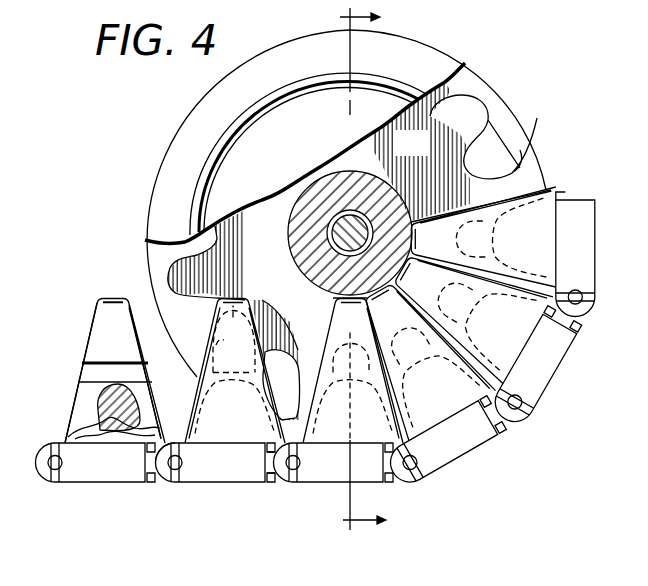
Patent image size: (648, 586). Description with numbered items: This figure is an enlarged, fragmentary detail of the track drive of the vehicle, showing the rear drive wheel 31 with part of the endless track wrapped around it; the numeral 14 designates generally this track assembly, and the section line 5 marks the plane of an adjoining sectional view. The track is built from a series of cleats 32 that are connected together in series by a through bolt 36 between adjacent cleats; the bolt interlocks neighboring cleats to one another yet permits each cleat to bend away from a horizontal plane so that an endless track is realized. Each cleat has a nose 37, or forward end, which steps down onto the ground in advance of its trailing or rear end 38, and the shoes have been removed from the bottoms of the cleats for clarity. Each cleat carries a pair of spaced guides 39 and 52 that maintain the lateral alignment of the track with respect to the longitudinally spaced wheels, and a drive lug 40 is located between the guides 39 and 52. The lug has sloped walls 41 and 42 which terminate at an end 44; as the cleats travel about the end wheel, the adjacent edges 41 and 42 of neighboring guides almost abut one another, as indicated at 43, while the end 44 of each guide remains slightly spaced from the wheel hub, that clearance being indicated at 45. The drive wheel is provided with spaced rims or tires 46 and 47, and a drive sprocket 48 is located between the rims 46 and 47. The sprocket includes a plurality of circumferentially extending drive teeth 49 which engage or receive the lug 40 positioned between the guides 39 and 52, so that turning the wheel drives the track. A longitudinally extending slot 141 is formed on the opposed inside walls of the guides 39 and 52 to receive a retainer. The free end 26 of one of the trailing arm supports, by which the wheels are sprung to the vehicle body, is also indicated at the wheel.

The section line 5- 5 is at (372, 270).
The conveyor chain 14 is at (333, 364).
The free end 26 is at (335, 220).
The rear drive wheel 31 is at (147, 157).
The cleats 32 is at (216, 470).
The through bolt 36 is at (186, 468).
The nose 37 is at (167, 478).
The rear end 38 is at (276, 484).
The guide 39 is at (88, 305).
The drive lug 40 is at (84, 400).
The sloped wall 41 is at (80, 356).
The sloped wall 42 is at (153, 370).
The near-abutment of adjacent edges 43 is at (432, 300).
The end of the guide 44 is at (114, 298).
The space from wheel hub 45 is at (326, 298).
The rim 46 is at (436, 44).
The rim 47 is at (468, 80).
The drive sprocket 48 is at (424, 153).
The drive teeth 49 is at (537, 118).
The guide 52 is at (250, 325).
The longitudinally extending slot 141 is at (84, 362).